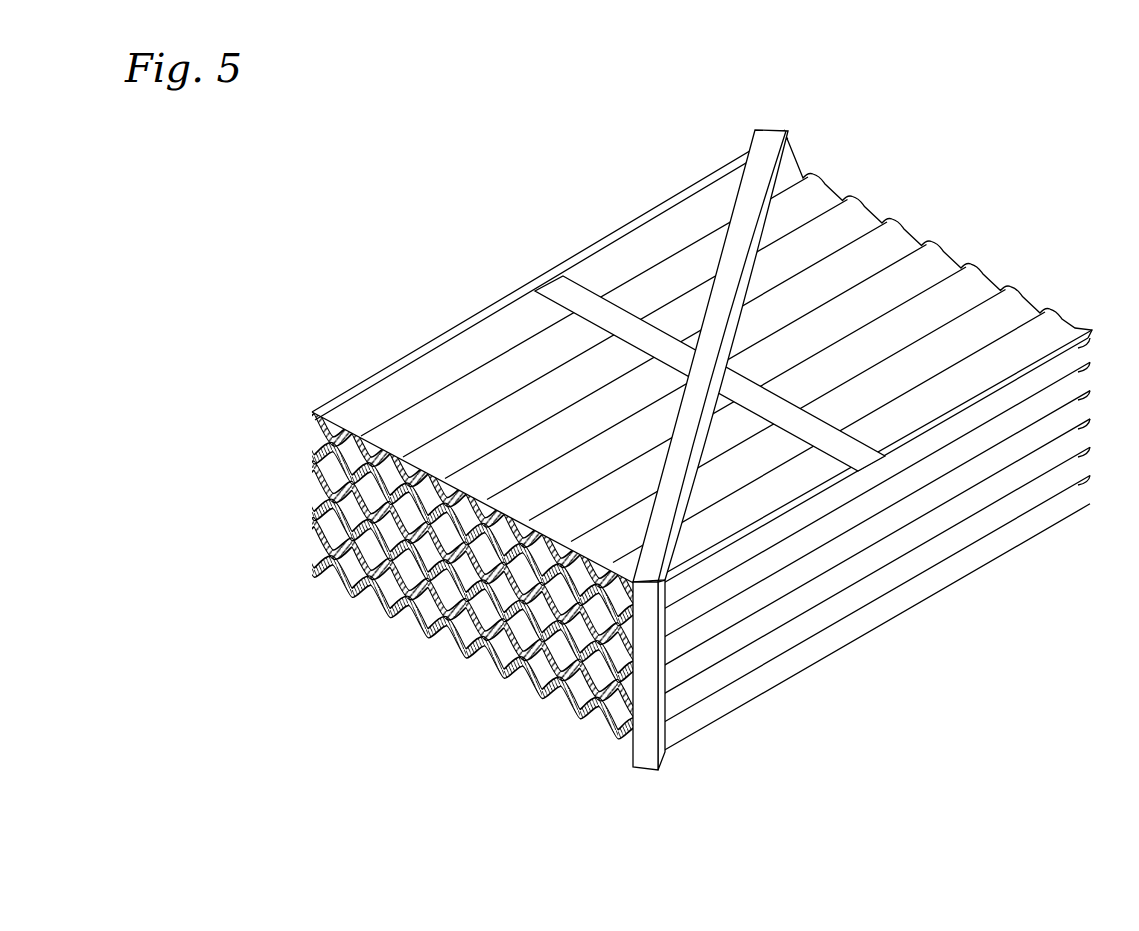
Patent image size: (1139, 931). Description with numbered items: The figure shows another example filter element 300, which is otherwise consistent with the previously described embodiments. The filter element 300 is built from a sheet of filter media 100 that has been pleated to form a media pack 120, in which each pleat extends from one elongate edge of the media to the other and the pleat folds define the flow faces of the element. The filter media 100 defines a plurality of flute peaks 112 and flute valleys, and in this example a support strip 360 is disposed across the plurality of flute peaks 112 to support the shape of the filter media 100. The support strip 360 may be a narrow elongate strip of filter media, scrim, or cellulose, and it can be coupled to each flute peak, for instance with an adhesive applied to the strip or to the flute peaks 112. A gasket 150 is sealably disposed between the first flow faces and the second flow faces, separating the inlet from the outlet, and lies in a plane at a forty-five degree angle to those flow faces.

The filter element 300 is at (694, 426).
The gasket 150 is at (767, 128).
The support strip 360 is at (570, 292).
The media pack 120 is at (458, 325).
The flute peaks 112 is at (367, 432).
The filter media 100 is at (1040, 332).